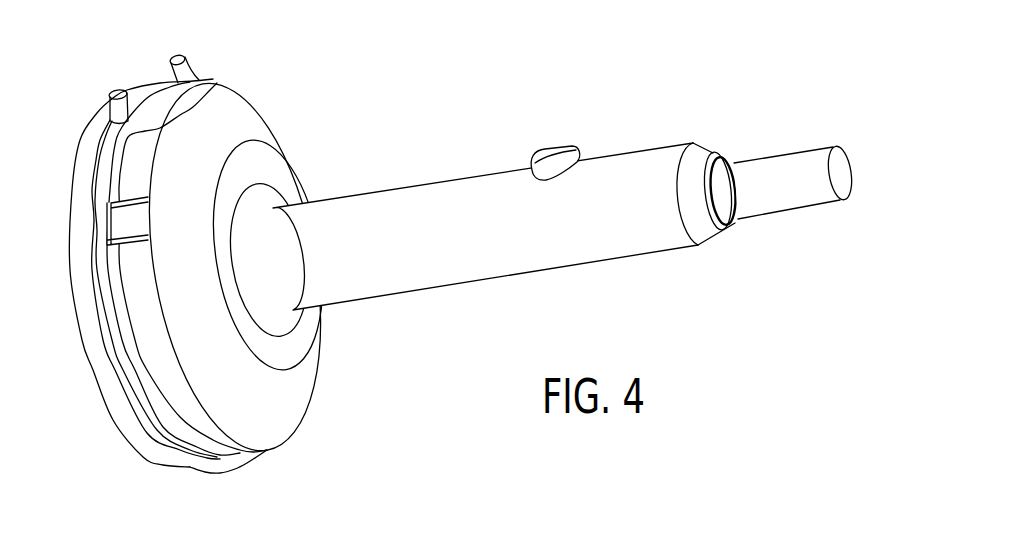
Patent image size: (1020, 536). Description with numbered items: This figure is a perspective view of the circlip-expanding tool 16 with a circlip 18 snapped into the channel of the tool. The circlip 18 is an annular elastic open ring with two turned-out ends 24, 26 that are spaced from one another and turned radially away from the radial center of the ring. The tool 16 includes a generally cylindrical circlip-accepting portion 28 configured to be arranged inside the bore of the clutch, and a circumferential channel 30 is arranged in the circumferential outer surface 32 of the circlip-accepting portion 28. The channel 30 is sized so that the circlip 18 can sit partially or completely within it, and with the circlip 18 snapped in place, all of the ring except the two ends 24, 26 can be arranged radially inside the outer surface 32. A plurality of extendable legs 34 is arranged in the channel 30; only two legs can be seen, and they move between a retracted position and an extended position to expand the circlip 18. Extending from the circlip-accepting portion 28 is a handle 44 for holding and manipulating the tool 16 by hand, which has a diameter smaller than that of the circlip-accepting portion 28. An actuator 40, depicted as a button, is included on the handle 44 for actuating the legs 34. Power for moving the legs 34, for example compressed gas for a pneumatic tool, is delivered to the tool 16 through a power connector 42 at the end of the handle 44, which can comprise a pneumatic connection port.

The circlip-expanding tool 16 is at (287, 223).
The circlip 18 is at (220, 467).
The turned-out end 24 is at (107, 114).
The turned-out end 26 is at (168, 78).
The circlip-accepting portion 28 is at (228, 105).
The circumferential channel 30 is at (232, 103).
The circumferential outer surface 32 is at (163, 372).
The extendable legs 34 is at (130, 223).
The actuator 40 is at (535, 152).
The power connector 42 is at (840, 173).
The handle 44 is at (485, 257).